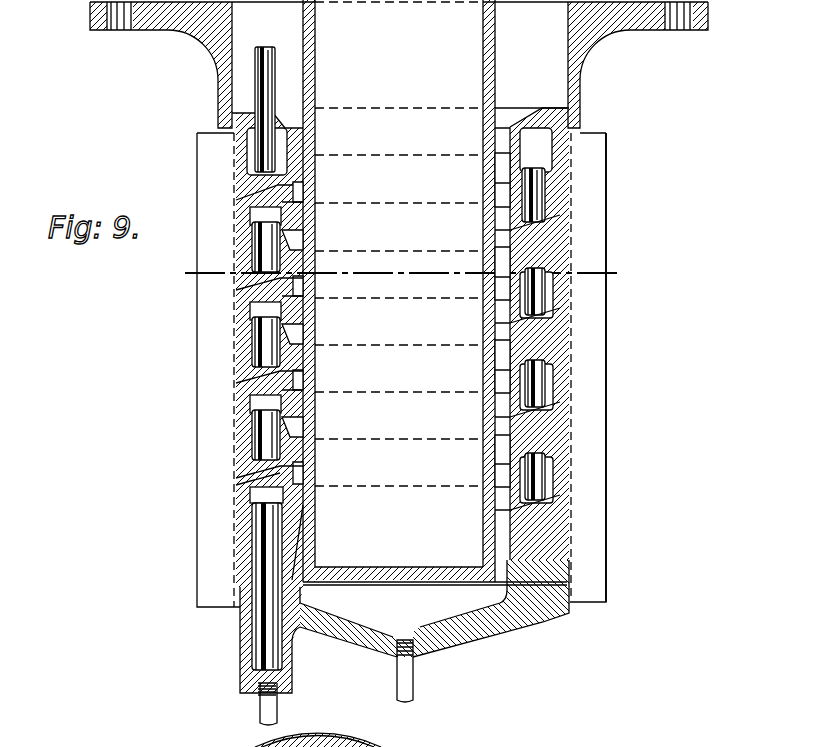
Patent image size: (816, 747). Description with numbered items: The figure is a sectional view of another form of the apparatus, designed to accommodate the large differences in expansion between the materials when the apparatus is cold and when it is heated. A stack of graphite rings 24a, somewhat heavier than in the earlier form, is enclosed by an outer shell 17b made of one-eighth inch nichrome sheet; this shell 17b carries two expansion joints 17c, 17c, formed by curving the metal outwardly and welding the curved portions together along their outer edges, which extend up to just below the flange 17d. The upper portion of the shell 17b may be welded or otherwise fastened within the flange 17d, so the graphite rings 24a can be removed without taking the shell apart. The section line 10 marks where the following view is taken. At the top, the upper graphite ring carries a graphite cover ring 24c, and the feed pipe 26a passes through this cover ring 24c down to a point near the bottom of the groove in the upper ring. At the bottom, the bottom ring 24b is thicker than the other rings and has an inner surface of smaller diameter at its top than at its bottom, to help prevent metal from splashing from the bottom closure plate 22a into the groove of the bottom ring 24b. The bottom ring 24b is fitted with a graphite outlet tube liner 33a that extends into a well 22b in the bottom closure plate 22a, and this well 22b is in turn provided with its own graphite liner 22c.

The section line 10 is at (690, 130).
The outer shell 17b is at (571, 490).
The expansion joint 17c is at (593, 305).
The flange 17d is at (588, 34).
The bottom closure plate 22a is at (473, 632).
The well 22b is at (211, 586).
The graphite liner 22c is at (254, 660).
The graphite ring 24a is at (234, 405).
The bottom ring 24b is at (240, 560).
The graphite cover ring 24c is at (240, 117).
The feed pipe 26a is at (266, 47).
The graphite outlet tube liner 33a is at (258, 532).